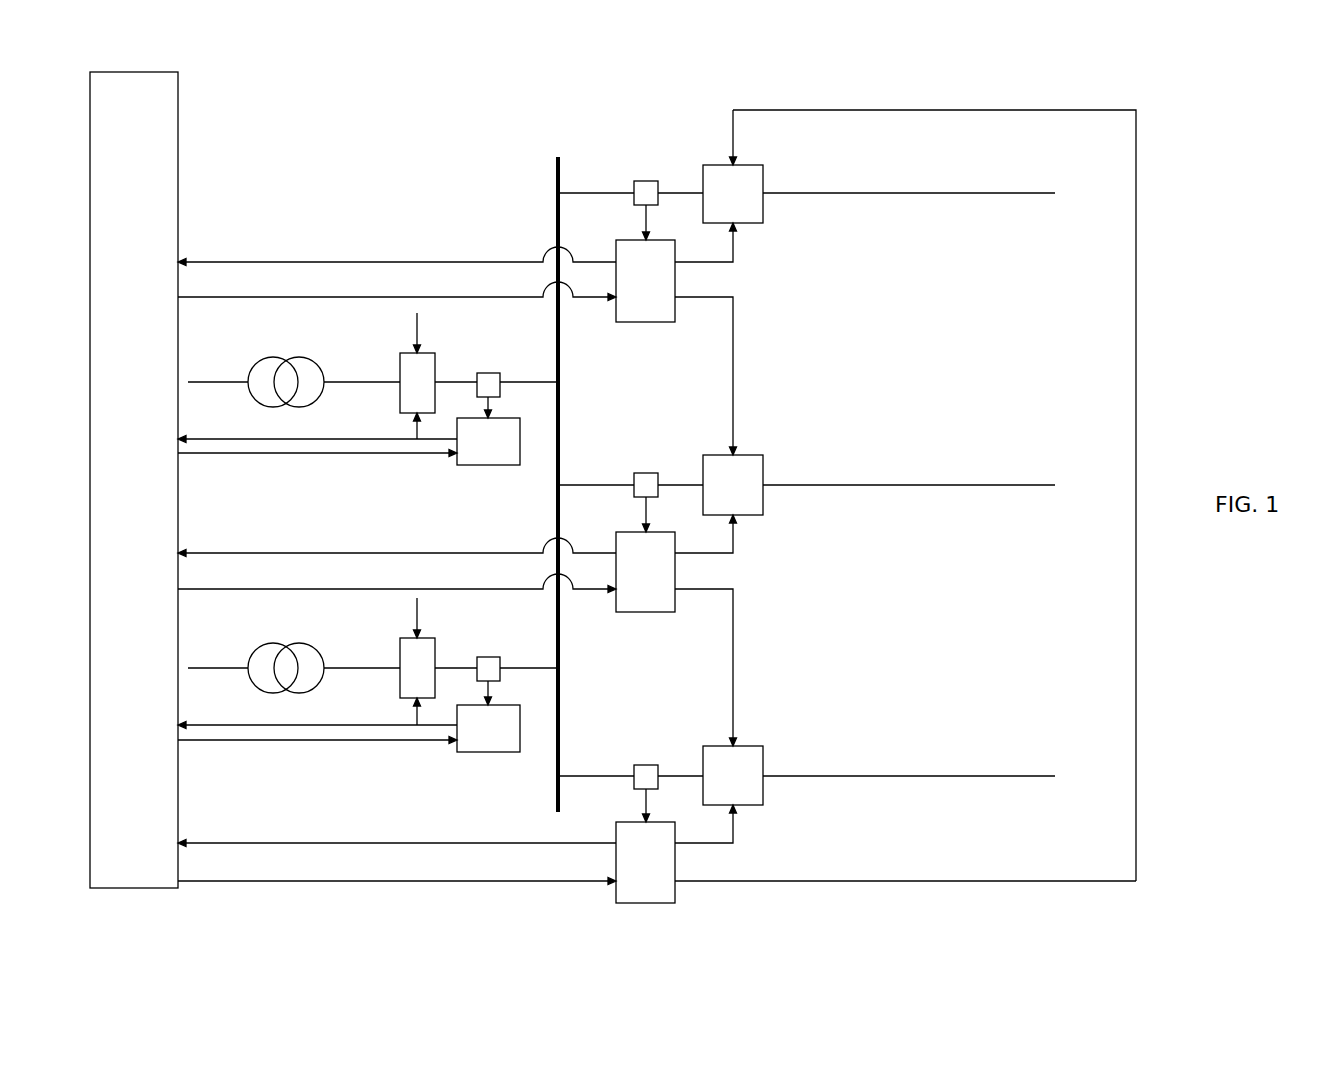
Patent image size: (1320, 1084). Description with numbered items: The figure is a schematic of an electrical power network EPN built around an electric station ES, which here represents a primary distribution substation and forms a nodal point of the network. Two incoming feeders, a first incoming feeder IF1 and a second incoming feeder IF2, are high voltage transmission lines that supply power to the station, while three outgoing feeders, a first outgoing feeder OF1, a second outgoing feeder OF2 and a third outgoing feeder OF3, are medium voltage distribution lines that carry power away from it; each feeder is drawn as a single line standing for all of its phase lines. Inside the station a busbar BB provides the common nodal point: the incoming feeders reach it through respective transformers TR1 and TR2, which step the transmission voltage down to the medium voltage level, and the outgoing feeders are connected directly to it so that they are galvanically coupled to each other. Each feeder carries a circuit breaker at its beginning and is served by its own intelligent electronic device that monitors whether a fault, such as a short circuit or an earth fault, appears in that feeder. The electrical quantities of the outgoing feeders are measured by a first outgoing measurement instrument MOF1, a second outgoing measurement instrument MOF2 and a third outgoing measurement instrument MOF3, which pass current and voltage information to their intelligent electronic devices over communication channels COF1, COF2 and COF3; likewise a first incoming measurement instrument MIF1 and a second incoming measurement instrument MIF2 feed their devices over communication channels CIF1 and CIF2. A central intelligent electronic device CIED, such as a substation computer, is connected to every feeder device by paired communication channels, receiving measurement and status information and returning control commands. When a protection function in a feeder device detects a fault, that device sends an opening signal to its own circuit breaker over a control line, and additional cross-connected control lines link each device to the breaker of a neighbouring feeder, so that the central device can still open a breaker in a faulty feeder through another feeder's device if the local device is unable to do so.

The central intelligent electronic device CIED is at (137, 110).
The electric station ES is at (585, 107).
The busbar BB is at (562, 155).
The electrical power network EPN is at (1148, 135).
The first outgoing feeder OF1 is at (920, 194).
The first outgoing measurement instrument MOF1 is at (641, 186).
The communication channel COF1 is at (643, 213).
The first incoming feeder IF1 is at (226, 383).
The transformer TR1 is at (268, 380).
The first incoming measurement instrument MIF1 is at (512, 368).
The communication channel CIF1 is at (498, 402).
The second outgoing feeder OF2 is at (910, 485).
The second outgoing measurement instrument MOF2 is at (645, 480).
The communication channel COF2 is at (642, 507).
The second incoming feeder IF2 is at (232, 669).
The transformer TR2 is at (268, 666).
The second incoming measurement instrument MIF2 is at (512, 655).
The communication channel CIF2 is at (498, 690).
The third outgoing feeder OF3 is at (1000, 776).
The third outgoing measurement instrument MOF3 is at (645, 755).
The communication channel COF3 is at (640, 808).